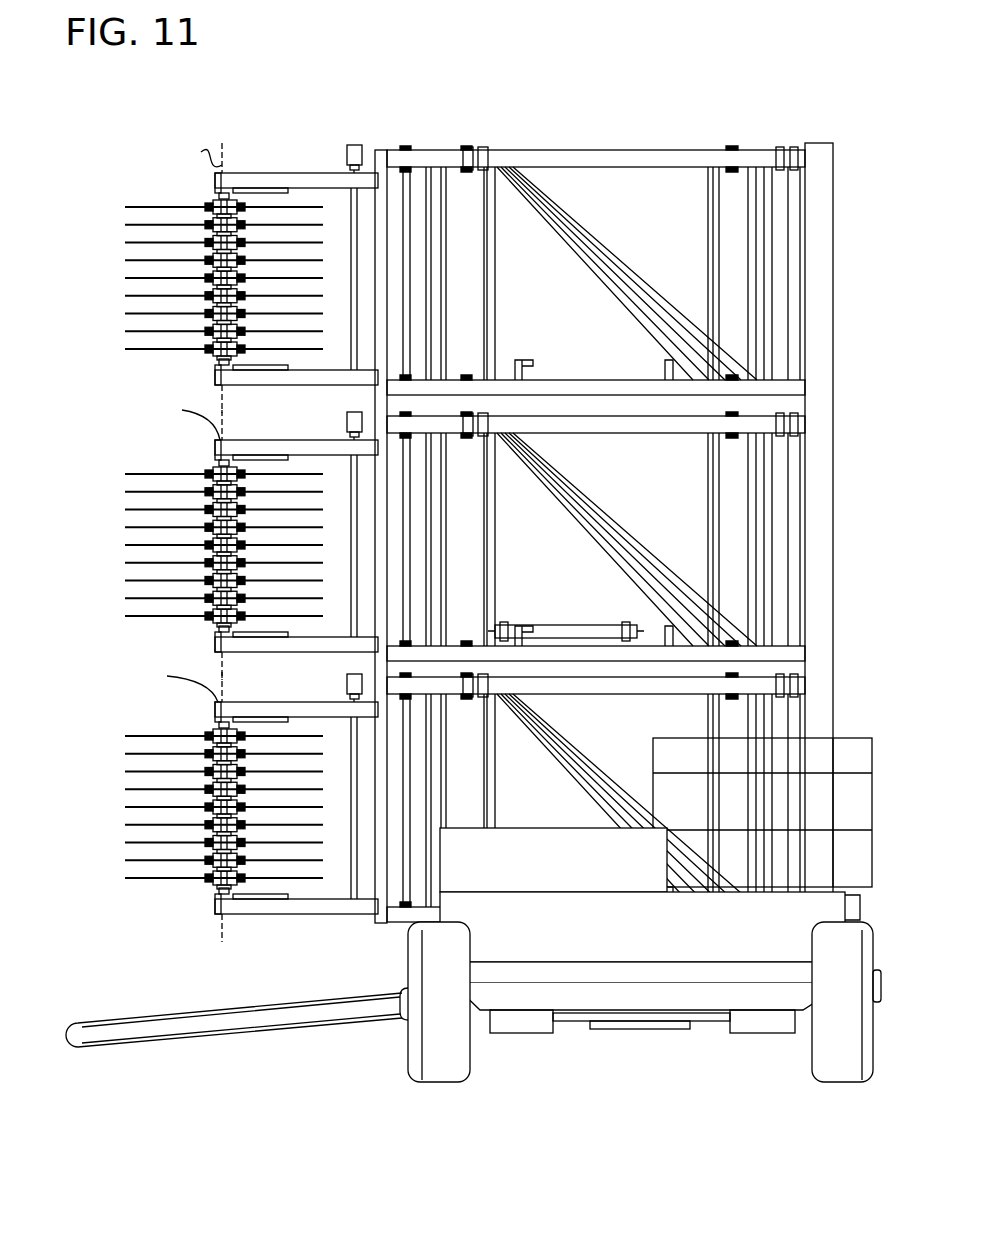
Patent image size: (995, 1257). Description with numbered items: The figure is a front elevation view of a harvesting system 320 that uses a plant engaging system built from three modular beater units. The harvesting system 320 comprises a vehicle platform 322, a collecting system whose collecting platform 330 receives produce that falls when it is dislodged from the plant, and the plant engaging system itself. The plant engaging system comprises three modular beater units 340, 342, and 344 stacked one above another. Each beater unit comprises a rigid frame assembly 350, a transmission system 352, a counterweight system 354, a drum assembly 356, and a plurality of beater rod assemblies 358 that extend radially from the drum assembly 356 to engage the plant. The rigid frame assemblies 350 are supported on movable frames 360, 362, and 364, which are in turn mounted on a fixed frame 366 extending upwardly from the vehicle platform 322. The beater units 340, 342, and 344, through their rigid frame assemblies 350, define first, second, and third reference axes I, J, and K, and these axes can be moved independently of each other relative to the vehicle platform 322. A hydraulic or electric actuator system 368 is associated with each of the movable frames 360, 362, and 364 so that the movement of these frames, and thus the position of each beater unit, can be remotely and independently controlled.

The harvesting system 320 is at (562, 492).
The vehicle platform 322 is at (473, 910).
The collecting platform 330 is at (220, 1040).
The beater unit 340 is at (206, 251).
The beater unit 342 is at (110, 483).
The beater unit 344 is at (110, 748).
The rigid frame assembly 350 is at (258, 170).
The transmission system 352 is at (356, 140).
The counterweight system 354 is at (291, 193).
The drum assembly 356 is at (201, 197).
The beater rod assemblies 358 is at (143, 218).
The movable frame 360 is at (397, 145).
The movable frame 362 is at (389, 414).
The movable frame 364 is at (389, 676).
The fixed frame 366 is at (813, 138).
The actuator system 368 is at (580, 620).